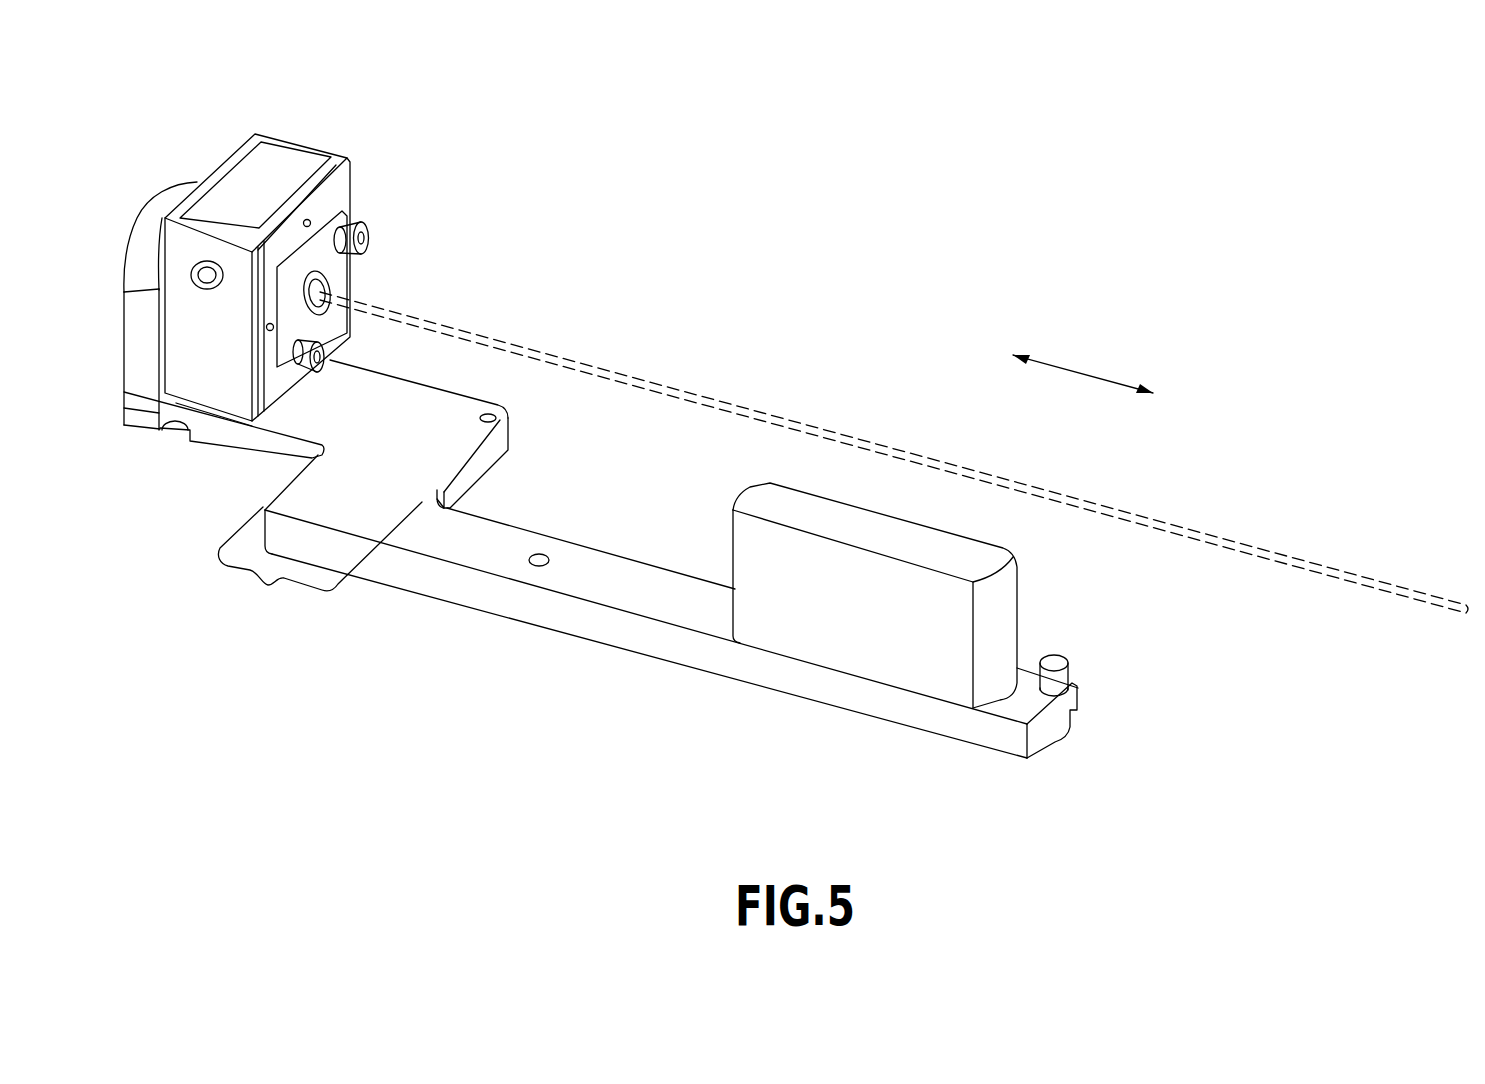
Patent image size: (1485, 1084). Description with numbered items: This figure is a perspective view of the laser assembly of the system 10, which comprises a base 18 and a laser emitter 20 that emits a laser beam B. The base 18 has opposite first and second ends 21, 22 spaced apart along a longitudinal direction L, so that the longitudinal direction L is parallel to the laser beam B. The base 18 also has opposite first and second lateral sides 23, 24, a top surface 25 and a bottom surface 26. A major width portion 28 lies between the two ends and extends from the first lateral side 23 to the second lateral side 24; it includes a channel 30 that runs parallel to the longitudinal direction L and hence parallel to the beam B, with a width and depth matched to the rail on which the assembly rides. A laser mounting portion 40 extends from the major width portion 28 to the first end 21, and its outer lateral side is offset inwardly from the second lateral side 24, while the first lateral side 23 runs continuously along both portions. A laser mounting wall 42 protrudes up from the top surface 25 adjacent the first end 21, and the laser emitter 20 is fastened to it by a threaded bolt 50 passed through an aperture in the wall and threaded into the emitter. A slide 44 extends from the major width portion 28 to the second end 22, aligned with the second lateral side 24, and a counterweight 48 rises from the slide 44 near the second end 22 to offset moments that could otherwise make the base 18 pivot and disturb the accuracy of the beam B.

The system 10 is at (670, 288).
The base 18 is at (512, 679).
The laser emitter 20 is at (324, 136).
The first end 21 is at (123, 393).
The second end 22 is at (1058, 733).
The first lateral side 23 is at (443, 386).
The second lateral side 24 is at (960, 730).
The top surface 25 is at (353, 413).
The bottom surface 26 is at (498, 442).
The major width portion 28 is at (265, 578).
The channel 30 is at (442, 497).
The laser mounting portion 40 is at (194, 462).
The laser mounting wall 42 is at (178, 187).
The slide 44 is at (681, 675).
The counterweight 48 is at (880, 627).
The threaded bolt 50 is at (130, 237).
The laser beam B is at (890, 447).
The longitudinal direction L is at (1087, 374).